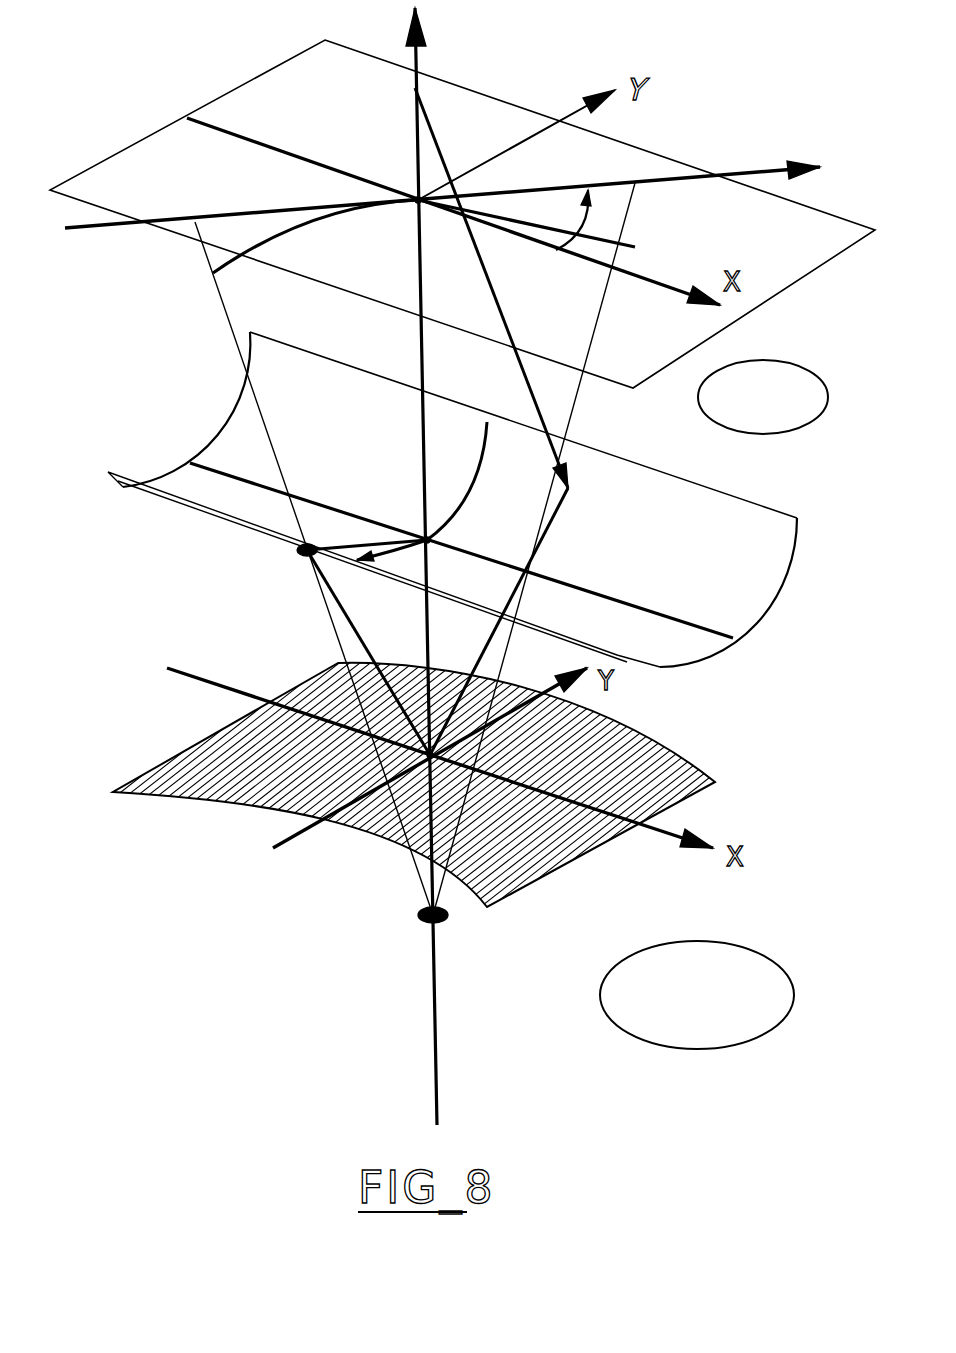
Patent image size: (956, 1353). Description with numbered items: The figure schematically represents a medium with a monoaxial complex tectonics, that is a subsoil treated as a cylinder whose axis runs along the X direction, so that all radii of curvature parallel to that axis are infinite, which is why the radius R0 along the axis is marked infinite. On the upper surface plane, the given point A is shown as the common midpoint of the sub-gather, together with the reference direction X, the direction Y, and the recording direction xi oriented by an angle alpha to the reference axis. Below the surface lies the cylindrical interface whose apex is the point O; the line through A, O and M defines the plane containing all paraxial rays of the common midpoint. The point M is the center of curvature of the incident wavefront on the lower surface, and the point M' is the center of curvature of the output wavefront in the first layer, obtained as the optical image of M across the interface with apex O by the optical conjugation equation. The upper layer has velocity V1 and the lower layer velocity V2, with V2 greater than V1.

The given point A is at (402, 175).
The apex of the interface O is at (412, 516).
The center of curvature of the incident wavefront M is at (407, 734).
The center of curvature of the output wavefront M' is at (380, 933).
The recording direction xi is at (446, 171).
The radius of curvature R0 infinite R0 is at (735, 562).
The velocity of the first layer V1 is at (763, 397).
The velocity of the second layer V2 is at (425, 785).